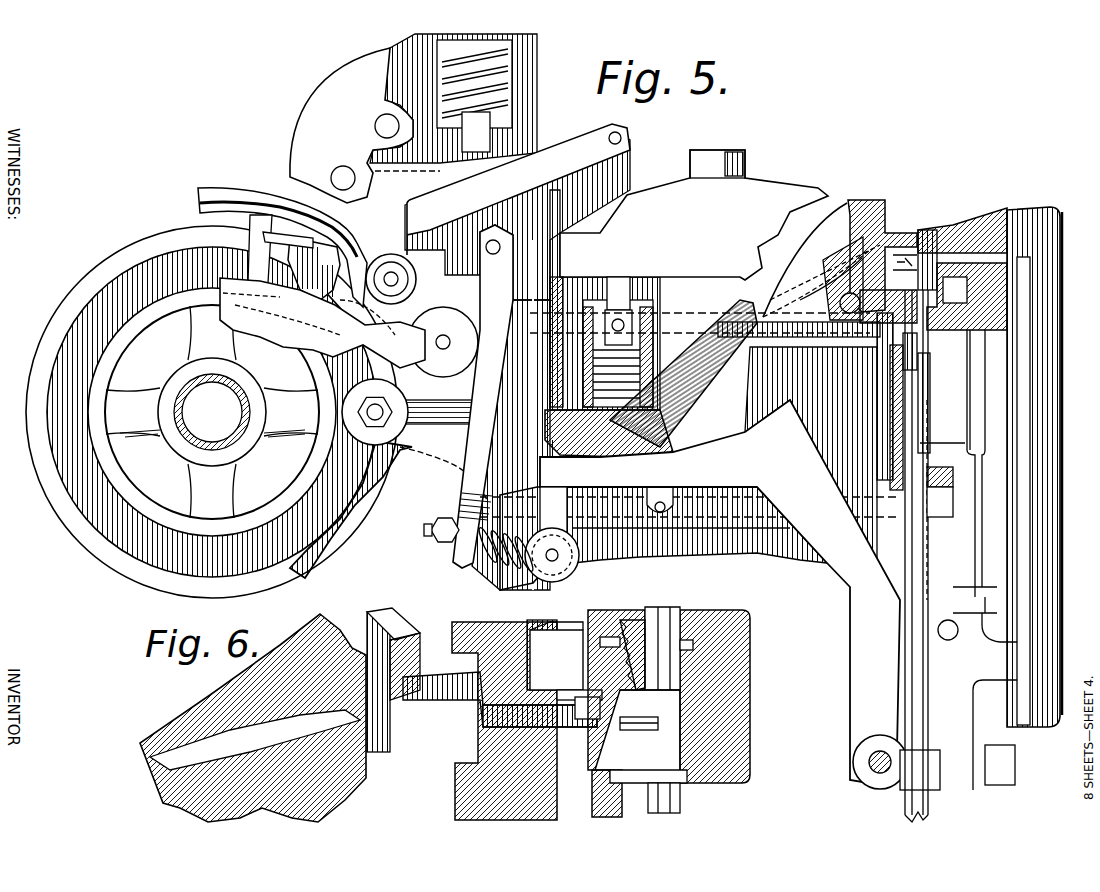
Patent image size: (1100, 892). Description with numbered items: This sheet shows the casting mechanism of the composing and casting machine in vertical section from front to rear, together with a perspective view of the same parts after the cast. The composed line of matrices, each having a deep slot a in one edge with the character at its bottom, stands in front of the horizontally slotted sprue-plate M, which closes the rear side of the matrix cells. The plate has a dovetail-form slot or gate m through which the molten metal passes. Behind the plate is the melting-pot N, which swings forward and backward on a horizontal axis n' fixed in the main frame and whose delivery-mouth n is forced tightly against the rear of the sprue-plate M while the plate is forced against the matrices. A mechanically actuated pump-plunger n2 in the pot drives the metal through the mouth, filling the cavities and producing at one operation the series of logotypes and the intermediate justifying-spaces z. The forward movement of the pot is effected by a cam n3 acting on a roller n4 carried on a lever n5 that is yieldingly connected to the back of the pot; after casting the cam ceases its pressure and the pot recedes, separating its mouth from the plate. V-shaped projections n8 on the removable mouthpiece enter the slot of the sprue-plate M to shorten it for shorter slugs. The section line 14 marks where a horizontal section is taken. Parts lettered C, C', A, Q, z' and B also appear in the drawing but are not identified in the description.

In FIG. 5, the cam n3 is at (322, 323).
In FIG. 5, the roller n4 is at (413, 205).
In FIG. 5, the lever n5 is at (483, 396).
In FIG. 5, the pump-plunger n2 is at (632, 298).
In FIG. 5, the melting-pot N is at (694, 215).
In FIG. 6, the melting-pot N is at (228, 704).
In FIG. 5, the delivery-mouth n is at (799, 282).
In FIG. 5, the slot or gate m is at (877, 247).
In FIG. 5, the frame part C is at (817, 274).
In FIG. 5, the section line 14 is at (862, 277).
In FIG. 5, the sprue-plate M is at (925, 195).
In FIG. 6, the sprue-plate M is at (480, 750).
In FIG. 5, the bar / block A is at (920, 312).
In FIG. 6, the bar / block A is at (669, 712).
In FIG. 5, the guide plate C' is at (953, 556).
In FIG. 5, the horizontal axis n' is at (740, 595).
In FIG. 6, the V-shaped projections n8 is at (430, 658).
In FIG. 6, the shaft Q is at (458, 717).
In FIG. 6, the justifying-spaces z is at (579, 693).
In FIG. 6, the key z' is at (606, 705).
In FIG. 6, the slot a is at (623, 728).
In FIG. 6, the base pin B is at (677, 800).